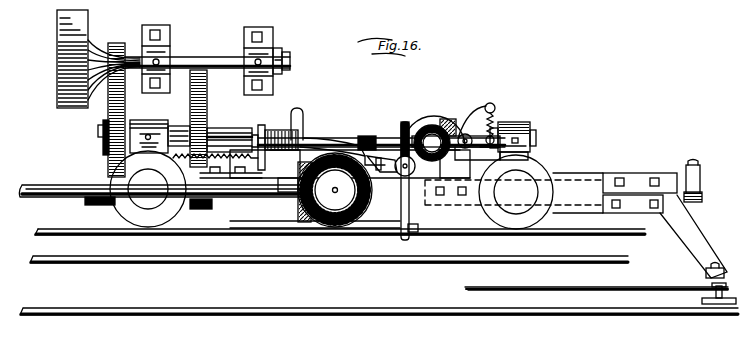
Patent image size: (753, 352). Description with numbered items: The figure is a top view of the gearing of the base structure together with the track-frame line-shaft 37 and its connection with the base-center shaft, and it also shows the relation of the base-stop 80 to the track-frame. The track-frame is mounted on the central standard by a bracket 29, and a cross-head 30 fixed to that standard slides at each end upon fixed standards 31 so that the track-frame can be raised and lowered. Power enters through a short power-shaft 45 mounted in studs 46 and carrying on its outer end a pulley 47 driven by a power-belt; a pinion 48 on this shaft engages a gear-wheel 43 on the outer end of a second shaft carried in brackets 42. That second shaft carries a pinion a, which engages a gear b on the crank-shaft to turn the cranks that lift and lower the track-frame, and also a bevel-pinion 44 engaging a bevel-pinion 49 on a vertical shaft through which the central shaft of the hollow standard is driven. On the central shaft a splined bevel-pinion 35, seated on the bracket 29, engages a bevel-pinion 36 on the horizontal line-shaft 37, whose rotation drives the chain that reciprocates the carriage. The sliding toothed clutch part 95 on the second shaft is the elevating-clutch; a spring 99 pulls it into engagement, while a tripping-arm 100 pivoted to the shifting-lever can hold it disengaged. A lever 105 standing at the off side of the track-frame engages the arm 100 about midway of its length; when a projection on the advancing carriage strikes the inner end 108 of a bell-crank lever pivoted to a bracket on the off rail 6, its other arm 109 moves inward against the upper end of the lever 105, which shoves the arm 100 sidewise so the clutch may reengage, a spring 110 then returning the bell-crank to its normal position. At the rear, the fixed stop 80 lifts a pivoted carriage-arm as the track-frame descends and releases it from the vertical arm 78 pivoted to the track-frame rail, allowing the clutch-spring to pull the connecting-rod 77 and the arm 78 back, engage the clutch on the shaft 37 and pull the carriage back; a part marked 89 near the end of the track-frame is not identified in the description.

The off rail 6 is at (379, 265).
The pulley 47 is at (58, 58).
The power-shaft 45 is at (228, 56).
The pinion 48 is at (116, 102).
The gear-wheel 43 is at (108, 152).
The studs 46 is at (155, 25).
The gear b is at (208, 92).
The pinion a is at (190, 126).
The sliding clutch part 95 is at (230, 127).
The line-shaft 37 is at (62, 185).
The fixed standards 31 is at (148, 170).
The bevel-pinion 35 is at (335, 190).
The bevel-pinion 36 is at (297, 208).
The tripping-arm 100 is at (313, 135).
The bell-crank arm 109 is at (366, 142).
The trip-lever 105 is at (372, 136).
The spring 110 is at (402, 176).
The inner end of bell-crank lever 108 is at (410, 209).
The bevel-pinion 49 is at (432, 138).
The bracket 29 is at (429, 113).
The bevel-pinion 44 is at (448, 132).
The spring 99 is at (494, 110).
The brackets 42 is at (530, 128).
The cross-head 30 is at (515, 192).
The post 89 is at (700, 196).
The stop 80 is at (706, 277).
The vertical arm 78 is at (712, 292).
The clutch-connecting rod 77 is at (596, 287).